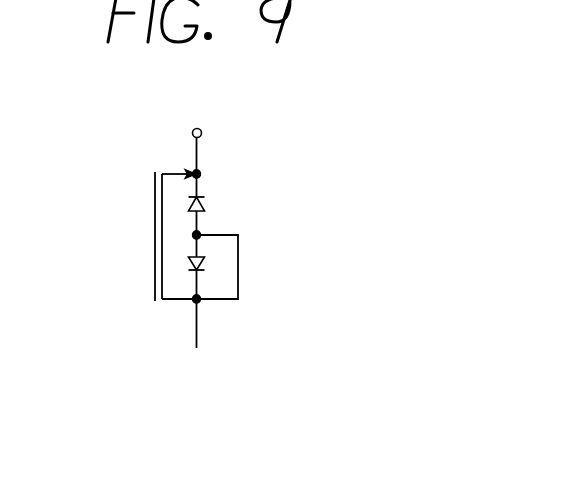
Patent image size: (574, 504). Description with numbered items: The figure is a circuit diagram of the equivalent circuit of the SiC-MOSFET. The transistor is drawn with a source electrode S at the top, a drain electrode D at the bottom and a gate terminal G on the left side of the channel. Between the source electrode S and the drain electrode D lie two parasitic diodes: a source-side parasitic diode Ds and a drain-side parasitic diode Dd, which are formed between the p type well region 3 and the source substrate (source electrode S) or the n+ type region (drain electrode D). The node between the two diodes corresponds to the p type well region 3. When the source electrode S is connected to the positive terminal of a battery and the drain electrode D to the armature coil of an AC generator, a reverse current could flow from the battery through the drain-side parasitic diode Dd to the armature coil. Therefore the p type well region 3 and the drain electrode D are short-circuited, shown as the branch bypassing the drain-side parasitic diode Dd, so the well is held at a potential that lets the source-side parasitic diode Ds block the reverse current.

The source electrode S is at (209, 177).
The drain electrode D is at (185, 317).
The gate terminal G is at (155, 236).
The source-side parasitic diode Ds is at (205, 204).
The drain-side parasitic diode Dd is at (205, 258).
The p type well region 3 is at (200, 233).